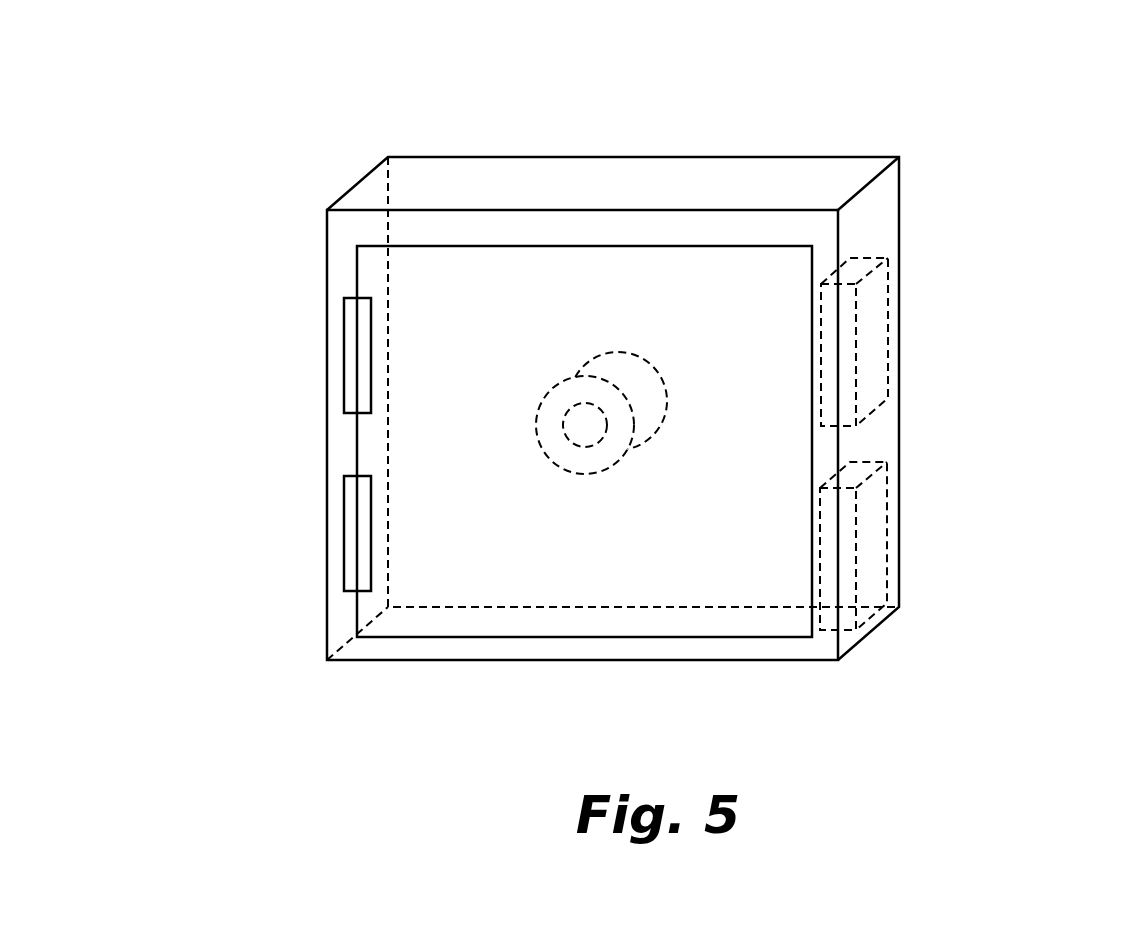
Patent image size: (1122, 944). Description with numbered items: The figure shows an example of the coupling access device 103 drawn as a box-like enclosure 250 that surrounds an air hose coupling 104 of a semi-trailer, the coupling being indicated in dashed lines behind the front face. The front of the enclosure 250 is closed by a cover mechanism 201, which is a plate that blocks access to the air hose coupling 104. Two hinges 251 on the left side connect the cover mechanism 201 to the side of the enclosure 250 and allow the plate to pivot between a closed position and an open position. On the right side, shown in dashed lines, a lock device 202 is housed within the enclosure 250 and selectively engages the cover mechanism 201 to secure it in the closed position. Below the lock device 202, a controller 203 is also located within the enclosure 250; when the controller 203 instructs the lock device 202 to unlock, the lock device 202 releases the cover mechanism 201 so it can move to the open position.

The coupling access device 103 is at (331, 150).
The air hose coupling 104 is at (617, 350).
The cover mechanism 201 is at (740, 317).
The lock device 202 is at (899, 343).
The controller 203 is at (899, 548).
The enclosure 250 is at (899, 238).
The hinges 251 is at (344, 354).